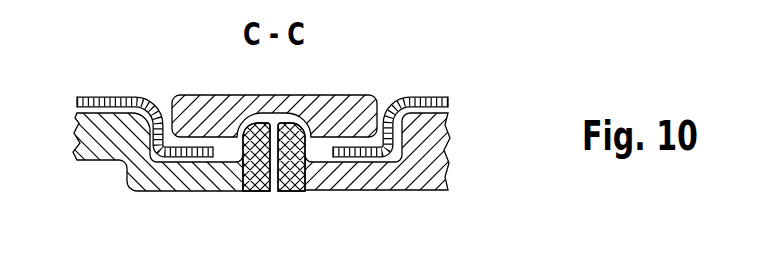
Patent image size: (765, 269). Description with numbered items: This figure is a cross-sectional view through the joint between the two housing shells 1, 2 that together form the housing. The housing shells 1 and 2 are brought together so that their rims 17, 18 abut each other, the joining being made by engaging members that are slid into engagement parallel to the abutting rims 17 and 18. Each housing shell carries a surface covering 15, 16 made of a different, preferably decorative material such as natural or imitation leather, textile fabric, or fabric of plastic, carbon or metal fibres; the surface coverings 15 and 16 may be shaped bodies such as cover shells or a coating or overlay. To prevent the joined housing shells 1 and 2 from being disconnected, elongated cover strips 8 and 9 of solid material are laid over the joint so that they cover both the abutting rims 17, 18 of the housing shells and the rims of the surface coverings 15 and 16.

The housing shell 1 is at (412, 163).
The housing shell 2 is at (177, 178).
The cover strip 8 is at (372, 134).
The cover strip 9 is at (342, 97).
The surface covering 15 is at (101, 95).
The surface covering 16 is at (101, 95).
The rim 17 is at (262, 145).
The rim 18 is at (288, 145).